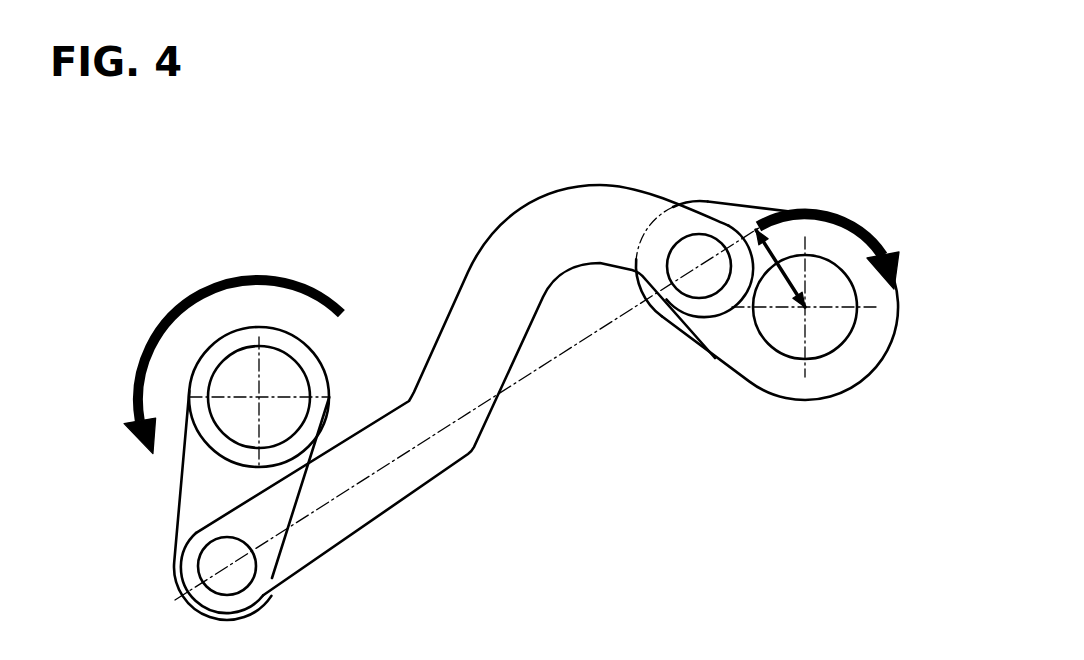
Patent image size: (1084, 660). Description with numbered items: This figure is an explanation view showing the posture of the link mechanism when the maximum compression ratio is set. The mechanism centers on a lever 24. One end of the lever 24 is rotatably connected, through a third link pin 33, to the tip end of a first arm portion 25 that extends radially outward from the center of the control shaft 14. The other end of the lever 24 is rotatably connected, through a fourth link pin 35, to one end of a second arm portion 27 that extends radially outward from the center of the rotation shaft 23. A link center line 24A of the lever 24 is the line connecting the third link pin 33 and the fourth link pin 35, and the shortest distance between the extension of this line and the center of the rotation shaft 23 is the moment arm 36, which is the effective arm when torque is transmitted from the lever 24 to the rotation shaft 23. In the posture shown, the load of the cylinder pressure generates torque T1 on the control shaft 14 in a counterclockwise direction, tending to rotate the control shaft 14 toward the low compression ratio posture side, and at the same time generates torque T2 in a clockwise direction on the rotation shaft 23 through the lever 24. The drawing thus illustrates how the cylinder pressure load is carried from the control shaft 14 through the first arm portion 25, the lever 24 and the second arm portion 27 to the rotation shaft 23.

The control shaft 14 is at (233, 430).
The rotation shaft 23 is at (840, 333).
The lever 24 is at (457, 451).
The link center line 24A is at (527, 378).
The first arm portion 25 is at (207, 508).
The second arm portion 27 is at (735, 208).
The third link pin 33 is at (210, 568).
The fourth link pin 35 is at (688, 289).
The moment arm 36 is at (756, 327).
The torque T1 is at (308, 287).
The torque T2 is at (873, 242).